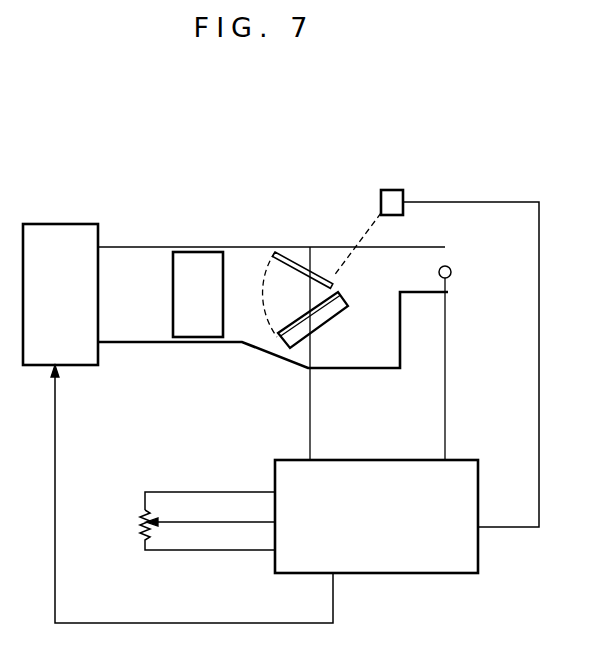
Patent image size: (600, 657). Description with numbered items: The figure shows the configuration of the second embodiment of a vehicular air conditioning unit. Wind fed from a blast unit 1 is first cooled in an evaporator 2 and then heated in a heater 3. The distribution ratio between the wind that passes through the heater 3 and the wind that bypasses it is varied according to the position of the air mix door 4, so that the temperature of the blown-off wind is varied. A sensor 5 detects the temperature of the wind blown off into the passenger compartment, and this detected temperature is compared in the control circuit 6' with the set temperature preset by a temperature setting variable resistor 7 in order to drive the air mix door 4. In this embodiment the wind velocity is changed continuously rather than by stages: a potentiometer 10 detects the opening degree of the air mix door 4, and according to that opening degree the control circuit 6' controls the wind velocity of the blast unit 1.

The blast unit 1 is at (60, 222).
The evaporator 2 is at (197, 250).
The heater 3 is at (283, 350).
The air mix door 4 is at (302, 262).
The sensor 5 is at (452, 272).
The control circuit 6' is at (286, 494).
The temperature setting variable resistor 7 is at (143, 515).
The potentiometer 10 is at (392, 190).